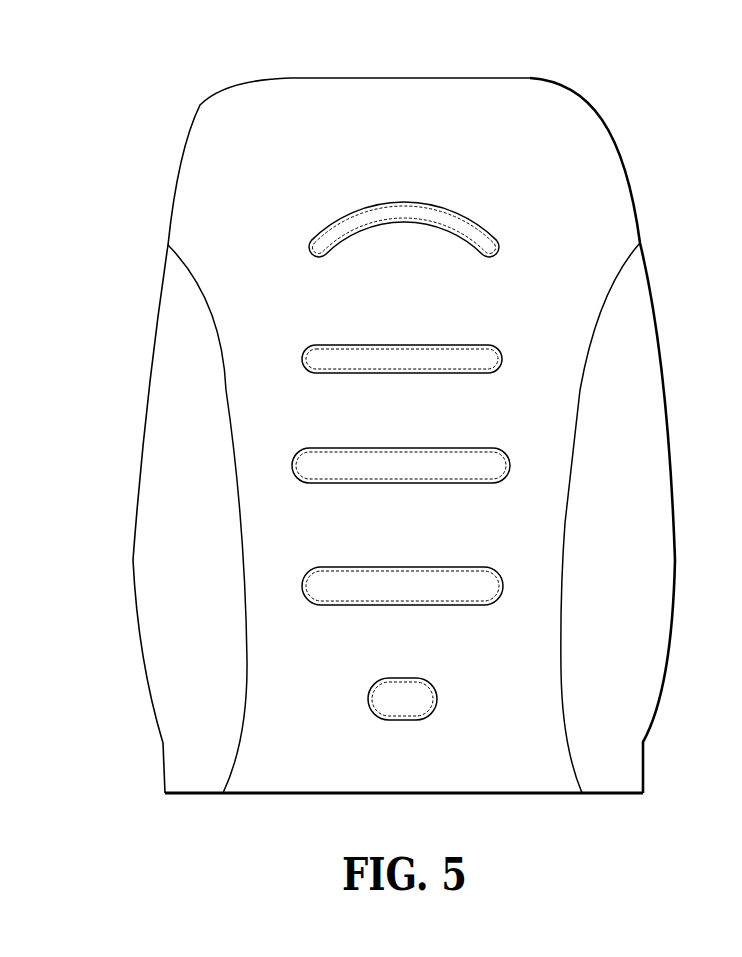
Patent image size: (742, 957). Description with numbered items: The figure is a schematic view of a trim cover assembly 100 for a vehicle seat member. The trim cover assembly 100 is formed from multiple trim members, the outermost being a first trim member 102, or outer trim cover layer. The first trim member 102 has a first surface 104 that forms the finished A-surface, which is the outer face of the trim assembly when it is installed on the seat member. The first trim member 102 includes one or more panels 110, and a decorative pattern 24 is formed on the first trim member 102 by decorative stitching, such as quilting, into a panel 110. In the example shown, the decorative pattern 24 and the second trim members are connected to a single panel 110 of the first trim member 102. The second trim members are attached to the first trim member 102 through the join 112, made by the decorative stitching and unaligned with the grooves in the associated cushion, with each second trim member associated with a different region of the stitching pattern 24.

The trim cover assembly 100 is at (404, 465).
The first trim member 102 is at (422, 750).
The first surface 104 is at (290, 172).
The panel 110 is at (502, 525).
The pattern 24 is at (293, 461).
The join 112 is at (397, 345).